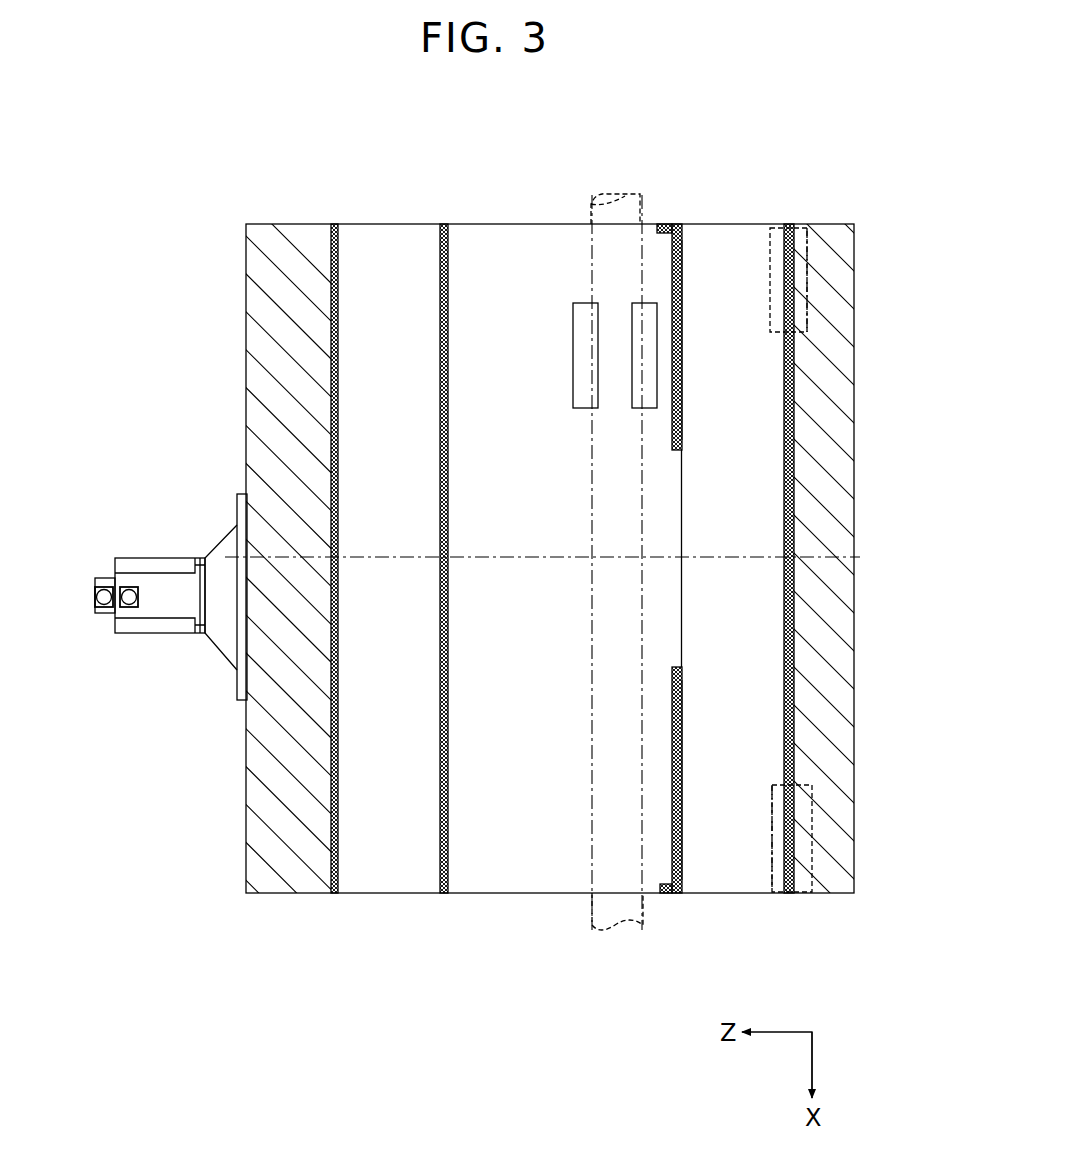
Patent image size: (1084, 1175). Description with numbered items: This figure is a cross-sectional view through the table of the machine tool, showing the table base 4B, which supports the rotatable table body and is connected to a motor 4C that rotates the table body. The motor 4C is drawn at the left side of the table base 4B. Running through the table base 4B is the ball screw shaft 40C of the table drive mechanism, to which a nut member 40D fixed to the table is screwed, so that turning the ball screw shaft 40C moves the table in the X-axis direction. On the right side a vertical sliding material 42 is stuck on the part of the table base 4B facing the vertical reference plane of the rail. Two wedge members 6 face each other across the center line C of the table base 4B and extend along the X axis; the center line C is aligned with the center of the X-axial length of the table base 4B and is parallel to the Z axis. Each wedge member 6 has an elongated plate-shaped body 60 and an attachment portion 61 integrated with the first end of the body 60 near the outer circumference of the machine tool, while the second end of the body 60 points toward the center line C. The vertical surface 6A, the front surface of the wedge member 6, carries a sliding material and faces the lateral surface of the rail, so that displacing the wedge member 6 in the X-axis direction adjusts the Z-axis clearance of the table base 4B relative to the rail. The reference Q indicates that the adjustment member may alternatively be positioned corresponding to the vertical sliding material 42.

The table base 4B is at (279, 912).
The motor 4C is at (165, 607).
The ball screw shaft 40C is at (593, 847).
The nut member 40D is at (580, 383).
The vertical sliding material 42 is at (784, 455).
The wedge member 6 is at (706, 551).
The vertical surface 6A is at (682, 282).
The body 60 is at (683, 343).
The attachment portion 61 is at (667, 224).
The reference Q is at (770, 256).
The center line C is at (515, 548).